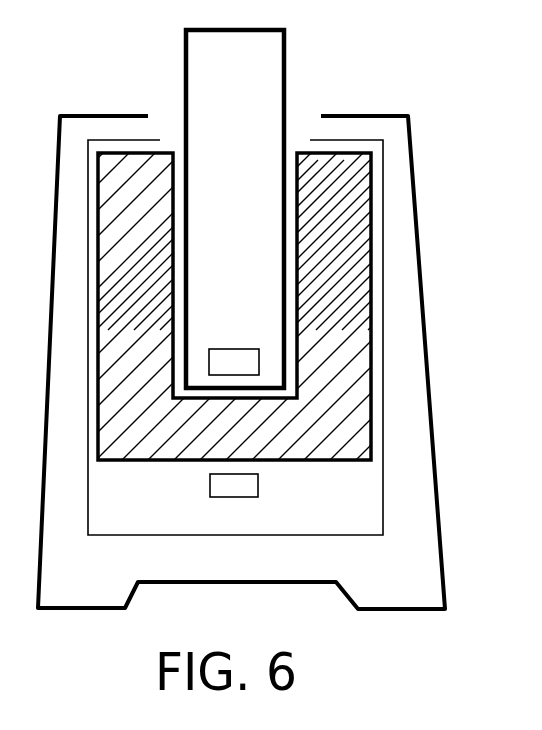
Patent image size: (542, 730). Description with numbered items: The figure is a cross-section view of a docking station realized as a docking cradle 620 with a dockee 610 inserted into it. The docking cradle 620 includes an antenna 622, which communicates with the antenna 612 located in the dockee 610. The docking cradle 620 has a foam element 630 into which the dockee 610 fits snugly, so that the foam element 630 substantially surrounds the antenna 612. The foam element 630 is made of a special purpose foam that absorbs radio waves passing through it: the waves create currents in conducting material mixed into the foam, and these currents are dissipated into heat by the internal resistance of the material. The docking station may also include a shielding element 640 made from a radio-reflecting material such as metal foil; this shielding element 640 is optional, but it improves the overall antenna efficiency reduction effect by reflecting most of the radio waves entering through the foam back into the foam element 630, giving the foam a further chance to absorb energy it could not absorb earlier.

The dockee 610 is at (286, 40).
The antenna 612 is at (228, 349).
The docking cradle 620 is at (410, 134).
The antenna 622 is at (210, 483).
The foam element 630 is at (330, 461).
The shielding element 640 is at (90, 537).